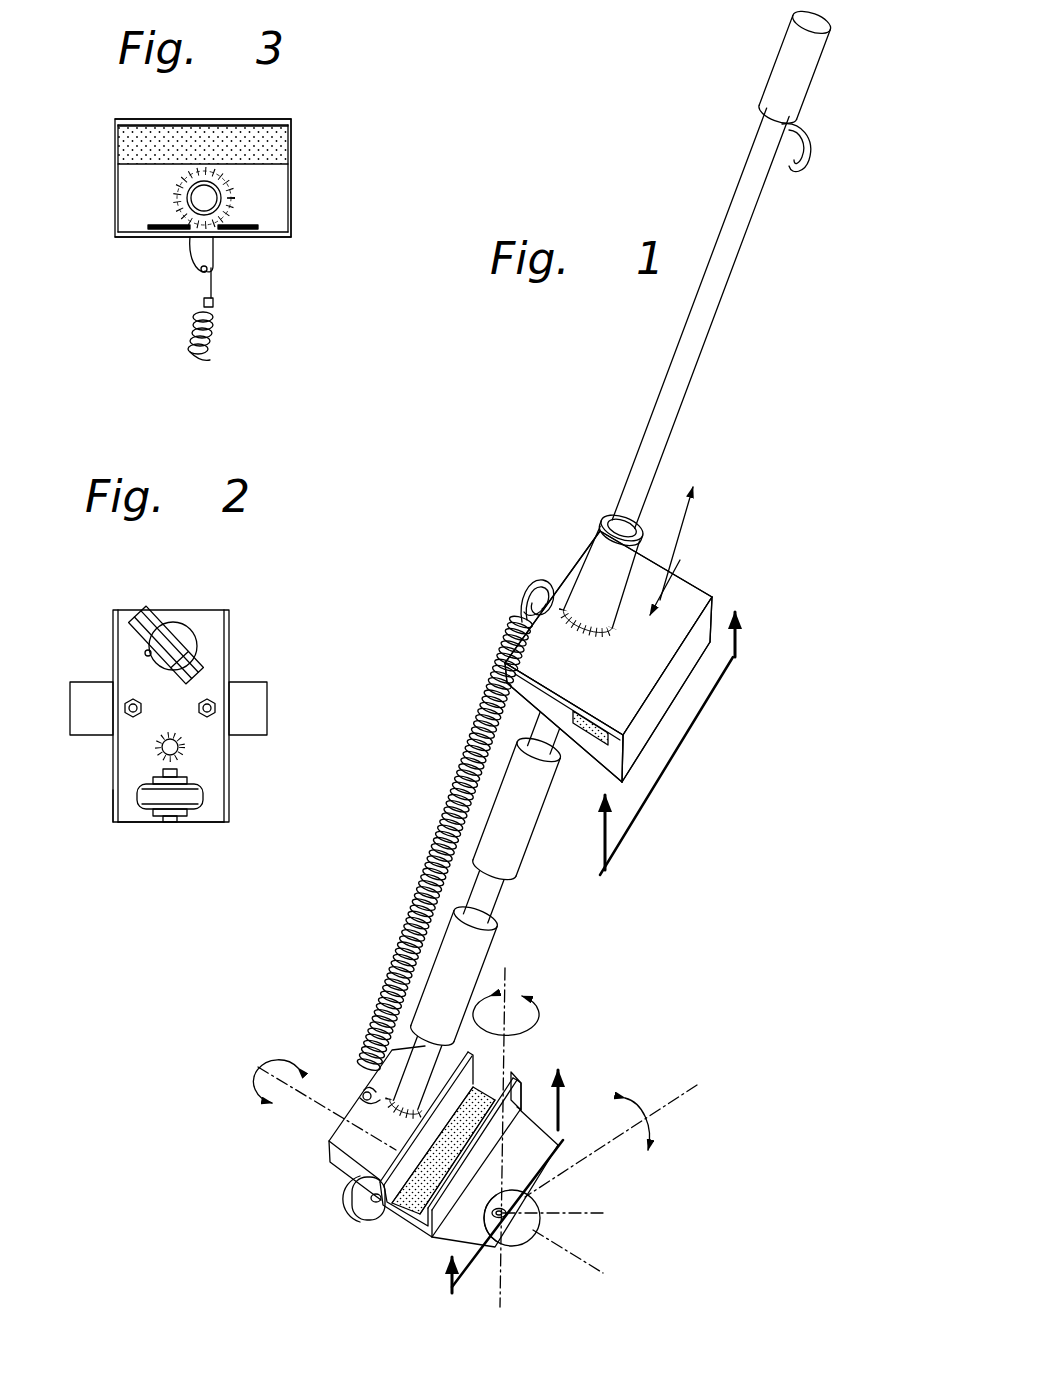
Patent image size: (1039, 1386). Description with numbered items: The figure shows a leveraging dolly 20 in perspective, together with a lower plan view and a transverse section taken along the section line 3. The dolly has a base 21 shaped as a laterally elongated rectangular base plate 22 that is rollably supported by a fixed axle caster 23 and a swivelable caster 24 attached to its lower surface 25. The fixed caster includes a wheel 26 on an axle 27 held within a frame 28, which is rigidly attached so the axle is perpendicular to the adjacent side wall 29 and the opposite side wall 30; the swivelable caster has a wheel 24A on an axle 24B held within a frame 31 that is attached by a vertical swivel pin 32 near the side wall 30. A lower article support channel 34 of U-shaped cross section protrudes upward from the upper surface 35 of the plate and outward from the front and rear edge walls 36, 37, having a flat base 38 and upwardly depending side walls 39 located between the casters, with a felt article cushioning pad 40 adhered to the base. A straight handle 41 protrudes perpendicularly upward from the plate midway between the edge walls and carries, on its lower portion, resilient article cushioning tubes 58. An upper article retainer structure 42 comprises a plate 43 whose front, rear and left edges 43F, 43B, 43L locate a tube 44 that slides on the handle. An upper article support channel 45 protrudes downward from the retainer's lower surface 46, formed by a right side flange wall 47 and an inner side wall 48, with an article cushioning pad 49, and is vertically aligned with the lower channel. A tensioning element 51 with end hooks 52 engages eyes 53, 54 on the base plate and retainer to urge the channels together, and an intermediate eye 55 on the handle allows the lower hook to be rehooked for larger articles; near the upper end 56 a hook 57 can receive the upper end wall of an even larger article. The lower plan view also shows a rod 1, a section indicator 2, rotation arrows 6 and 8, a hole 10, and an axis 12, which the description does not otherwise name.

In FIG. 1, the rod 1 is at (540, 720).
In FIG. 1, the section line 2- 2 is at (506, 1166).
In FIG. 1, the section line 3- 3 is at (672, 731).
In FIG. 1, the rotation arrow about transverse axis 6 is at (290, 1048).
In FIG. 1, the rotation arrow about vertical axis 8 is at (540, 1005).
In FIG. 2, the hole 10 is at (185, 745).
In FIG. 1, the vertical axis 12 is at (500, 1262).
In FIG. 1, the leveraging dolly 20 is at (770, 362).
In FIG. 2, the base 21 is at (220, 600).
In FIG. 1, the base 21 is at (325, 1149).
In FIG. 1, the base plate 22 is at (337, 1150).
In FIG. 2, the fixed axle caster 23 is at (212, 798).
In FIG. 1, the fixed axle caster 23 is at (360, 1214).
In FIG. 2, the swivelable caster 24 is at (140, 617).
In FIG. 1, the swivelable caster 24 is at (542, 1226).
In FIG. 2, the wheel 24A is at (205, 645).
In FIG. 2, the axle 24B is at (146, 655).
In FIG. 2, the lower surface 25 is at (213, 668).
In FIG. 2, the wheel 26 is at (140, 797).
In FIG. 2, the axle 27 is at (170, 824).
In FIG. 2, the frame 28 is at (160, 772).
In FIG. 2, the side wall 29 is at (132, 822).
In FIG. 2, the opposite side wall 30 is at (175, 610).
In FIG. 2, the frame 31 is at (187, 679).
In FIG. 1, the swivel pin 32 is at (507, 1212).
In FIG. 2, the lower article support channel 34 is at (72, 718).
In FIG. 1, the lower article support channel 34 is at (528, 1080).
In FIG. 1, the upper surface 35 is at (330, 1132).
In FIG. 2, the front edge wall 36 is at (113, 805).
In FIG. 1, the front edge wall 36 is at (350, 1182).
In FIG. 2, the rear edge wall 37 is at (229, 810).
In FIG. 1, the rear edge wall 37 is at (562, 1140).
In FIG. 1, the flat base 38 is at (423, 1240).
In FIG. 1, the side walls 39 is at (454, 1125).
In FIG. 1, the article cushioning pad 40 is at (403, 1228).
In FIG. 1, the handle 41 is at (657, 398).
In FIG. 3, the upper article retainer structure 42 is at (300, 214).
In FIG. 1, the upper article retainer structure 42 is at (718, 583).
In FIG. 3, the plate 43 is at (133, 196).
In FIG. 1, the plate 43 is at (722, 572).
In FIG. 1, the rear edge 43B is at (705, 565).
In FIG. 1, the front edge 43F is at (500, 668).
In FIG. 1, the left edge 43L is at (575, 565).
In FIG. 3, the tube 44 is at (222, 203).
In FIG. 1, the tube 44 is at (600, 527).
In FIG. 3, the upper article support channel 45 is at (297, 132).
In FIG. 1, the upper article support channel 45 is at (697, 651).
In FIG. 3, the lower surface 46 is at (120, 222).
In FIG. 1, the right side flange wall 47 is at (660, 708).
In FIG. 3, the inner side wall 48 is at (120, 166).
In FIG. 3, the article cushioning pad 49 is at (282, 150).
In FIG. 1, the article cushioning pad 49 is at (597, 746).
In FIG. 1, the tensioning element 51 is at (440, 830).
In FIG. 3, the hooks 52 is at (215, 295).
In FIG. 1, the hooks 52 is at (527, 600).
In FIG. 3, the eye 53 is at (215, 257).
In FIG. 1, the eye 53 is at (364, 1090).
In FIG. 1, the eye 54 is at (545, 598).
In FIG. 3, the intermediate eye 55 is at (212, 355).
In FIG. 1, the intermediate eye 55 is at (435, 895).
In FIG. 1, the upper end 56 is at (772, 62).
In FIG. 1, the hook 57 is at (804, 166).
In FIG. 1, the article cushioning tubes 58 is at (490, 945).